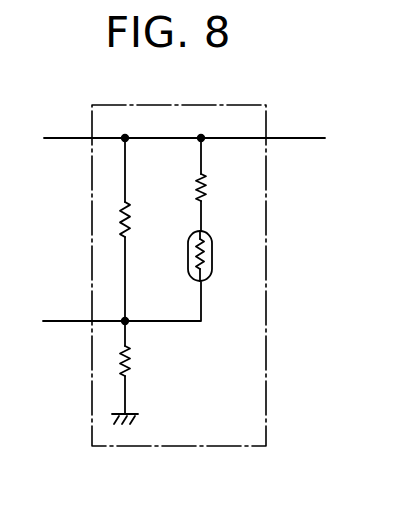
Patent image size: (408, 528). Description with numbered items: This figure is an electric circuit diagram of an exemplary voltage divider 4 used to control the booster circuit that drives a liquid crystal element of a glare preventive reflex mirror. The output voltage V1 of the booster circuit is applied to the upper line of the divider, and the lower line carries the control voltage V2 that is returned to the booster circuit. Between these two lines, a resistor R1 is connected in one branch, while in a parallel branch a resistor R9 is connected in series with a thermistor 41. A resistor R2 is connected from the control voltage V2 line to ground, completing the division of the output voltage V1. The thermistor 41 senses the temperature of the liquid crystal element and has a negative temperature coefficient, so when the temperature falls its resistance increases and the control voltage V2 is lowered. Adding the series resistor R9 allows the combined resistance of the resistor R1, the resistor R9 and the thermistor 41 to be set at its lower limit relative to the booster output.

The voltage divider 4 is at (240, 101).
The output voltage V1 is at (63, 132).
The control voltage V2 is at (62, 319).
The resistor R1 is at (130, 215).
The resistor R9 is at (208, 183).
The thermistor 41 is at (211, 258).
The resistor R2 is at (131, 358).